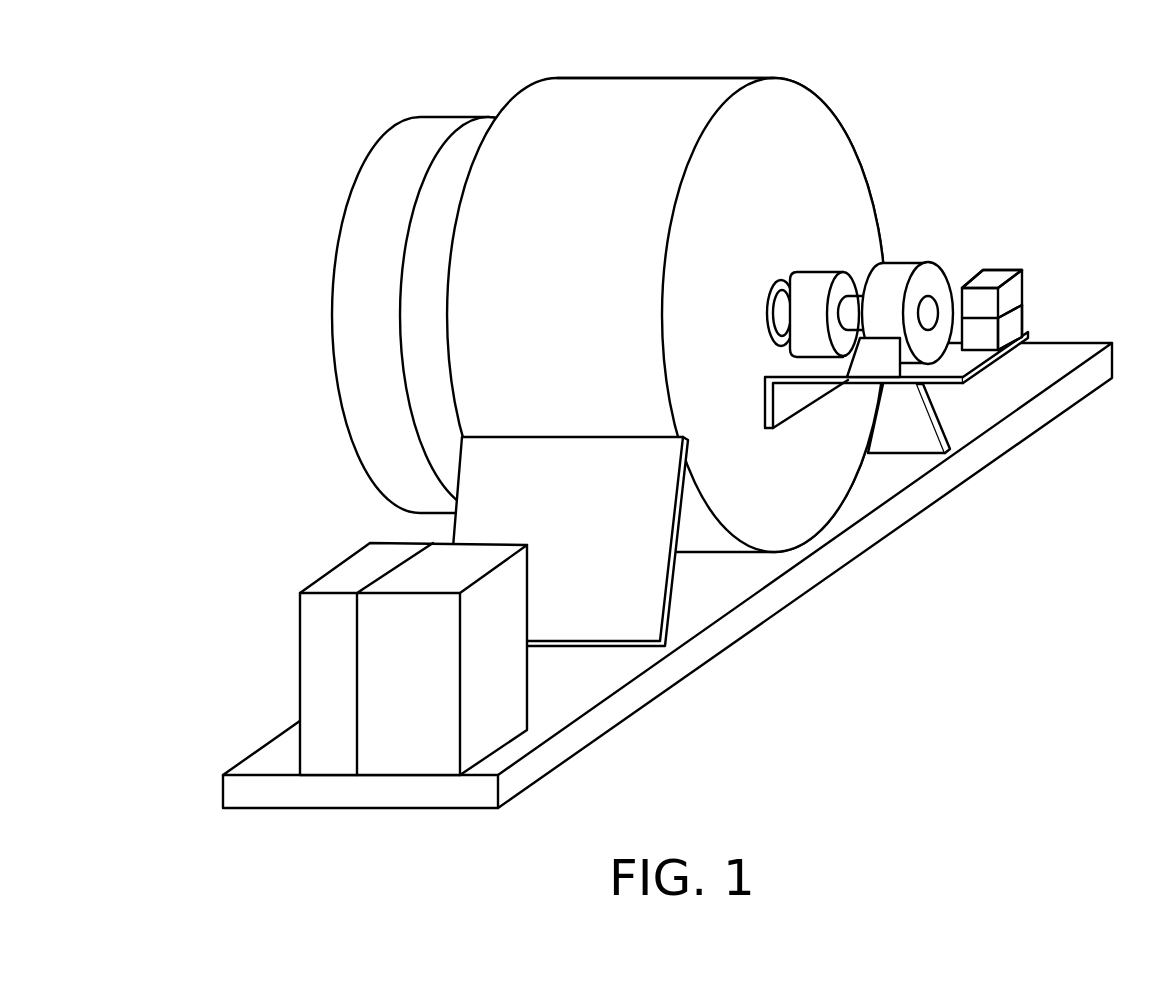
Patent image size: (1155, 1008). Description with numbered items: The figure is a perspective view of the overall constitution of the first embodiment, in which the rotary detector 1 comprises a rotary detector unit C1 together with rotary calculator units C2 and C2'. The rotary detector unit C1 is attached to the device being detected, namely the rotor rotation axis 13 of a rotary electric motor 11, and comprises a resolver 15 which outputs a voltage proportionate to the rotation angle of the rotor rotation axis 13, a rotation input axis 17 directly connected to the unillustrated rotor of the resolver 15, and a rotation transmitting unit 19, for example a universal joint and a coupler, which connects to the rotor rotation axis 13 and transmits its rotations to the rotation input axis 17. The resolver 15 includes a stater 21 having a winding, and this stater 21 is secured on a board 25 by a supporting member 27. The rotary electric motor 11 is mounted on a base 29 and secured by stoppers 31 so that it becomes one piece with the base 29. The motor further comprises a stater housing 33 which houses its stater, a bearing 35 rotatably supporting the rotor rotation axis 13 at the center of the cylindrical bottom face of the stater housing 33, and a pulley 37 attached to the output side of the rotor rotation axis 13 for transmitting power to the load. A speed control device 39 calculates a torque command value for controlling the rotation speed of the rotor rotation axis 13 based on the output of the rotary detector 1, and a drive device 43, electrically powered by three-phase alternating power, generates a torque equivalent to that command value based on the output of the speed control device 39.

The rotary detector 1 is at (903, 256).
The rotary electric motor 11 is at (650, 77).
The rotor rotation axis 13 is at (776, 314).
The resolver 15 is at (877, 278).
The rotation input axis 17 is at (830, 274).
The rotation transmitting unit 19 is at (803, 342).
The stater 21 is at (990, 272).
The board 25 is at (963, 381).
The supporting member 27 is at (872, 367).
The base 29 is at (252, 757).
The stoppers 31 is at (947, 443).
The stater housing 33 is at (812, 103).
The bearing 35 is at (784, 280).
The pulley 37 is at (343, 326).
The speed control device 39 is at (328, 572).
The drive device 43 is at (410, 758).
The rotary detector unit C1 is at (935, 282).
The rotary calculator unit C2 is at (1045, 307).
The rotary calculator unit C2' is at (1031, 245).